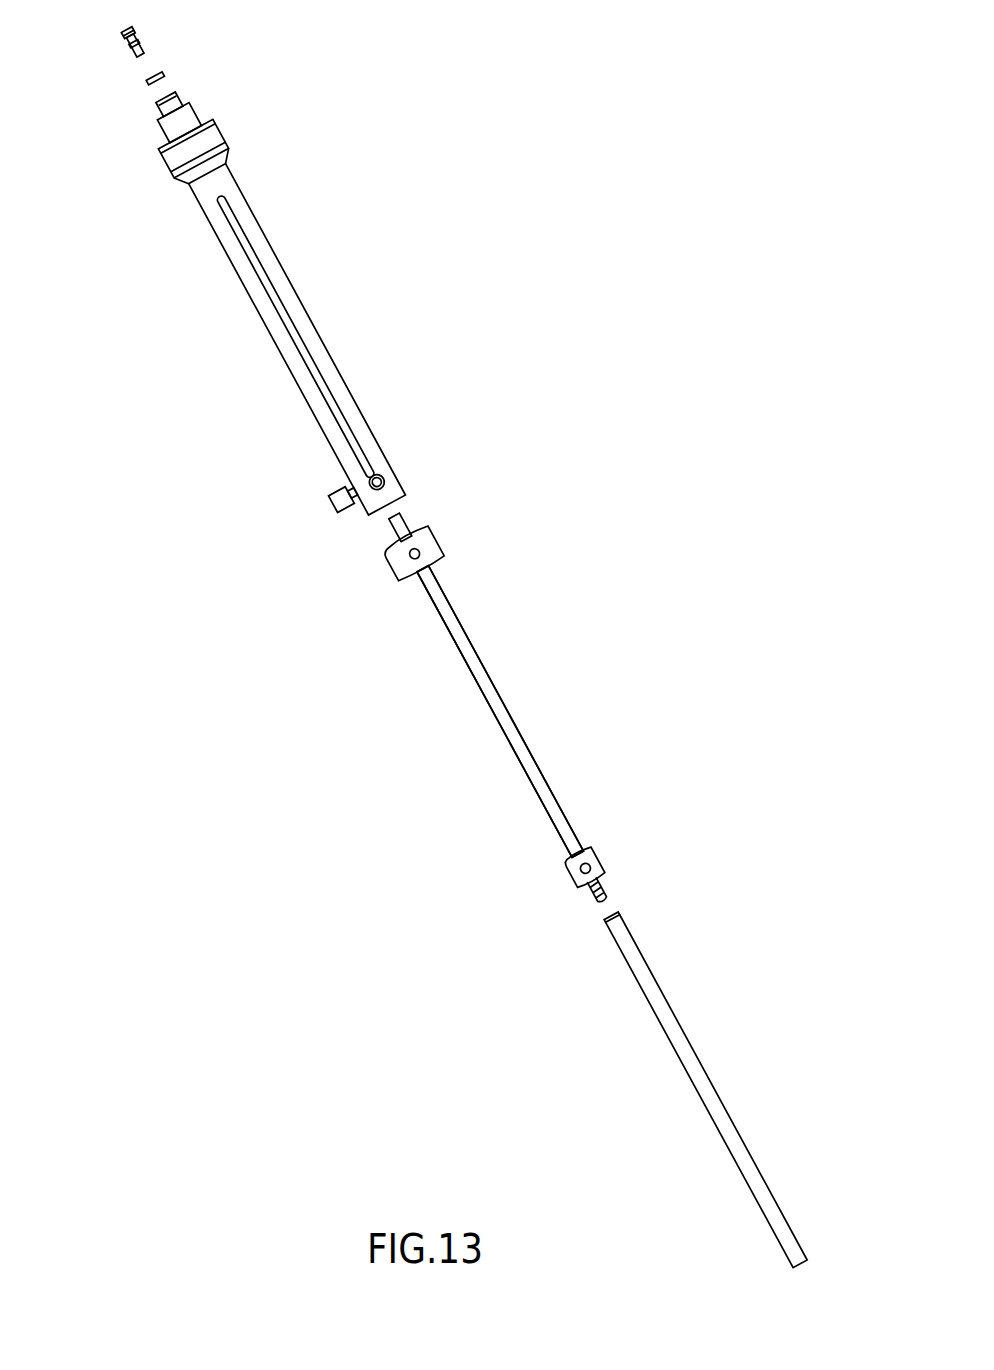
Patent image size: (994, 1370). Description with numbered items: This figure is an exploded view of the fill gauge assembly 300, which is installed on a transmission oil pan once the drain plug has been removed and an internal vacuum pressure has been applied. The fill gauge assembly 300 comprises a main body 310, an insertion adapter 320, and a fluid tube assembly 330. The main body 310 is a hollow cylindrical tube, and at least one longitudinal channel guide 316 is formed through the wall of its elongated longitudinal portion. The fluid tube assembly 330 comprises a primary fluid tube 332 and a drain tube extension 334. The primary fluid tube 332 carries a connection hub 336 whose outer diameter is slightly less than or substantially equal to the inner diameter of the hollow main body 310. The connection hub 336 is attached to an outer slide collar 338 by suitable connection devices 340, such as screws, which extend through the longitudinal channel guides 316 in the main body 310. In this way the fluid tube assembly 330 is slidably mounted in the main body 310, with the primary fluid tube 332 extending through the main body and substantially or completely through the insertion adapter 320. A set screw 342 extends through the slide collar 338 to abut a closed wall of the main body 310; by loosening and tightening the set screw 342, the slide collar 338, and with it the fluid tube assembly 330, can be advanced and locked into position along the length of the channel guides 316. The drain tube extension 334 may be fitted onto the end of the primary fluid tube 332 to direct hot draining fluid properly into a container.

The fill gauge assembly 300 is at (592, 300).
The main body 310 is at (283, 267).
The longitudinal channel guide 316 is at (293, 334).
The insertion adapter 320 is at (156, 127).
The fluid tube assembly 330 is at (485, 695).
The primary fluid tube 332 is at (525, 767).
The drain tube extension 334 is at (707, 1090).
The connection hub 336 is at (597, 860).
The outer slide collar 338 is at (433, 543).
The connection device 340 is at (370, 482).
The set screw 342 is at (333, 500).